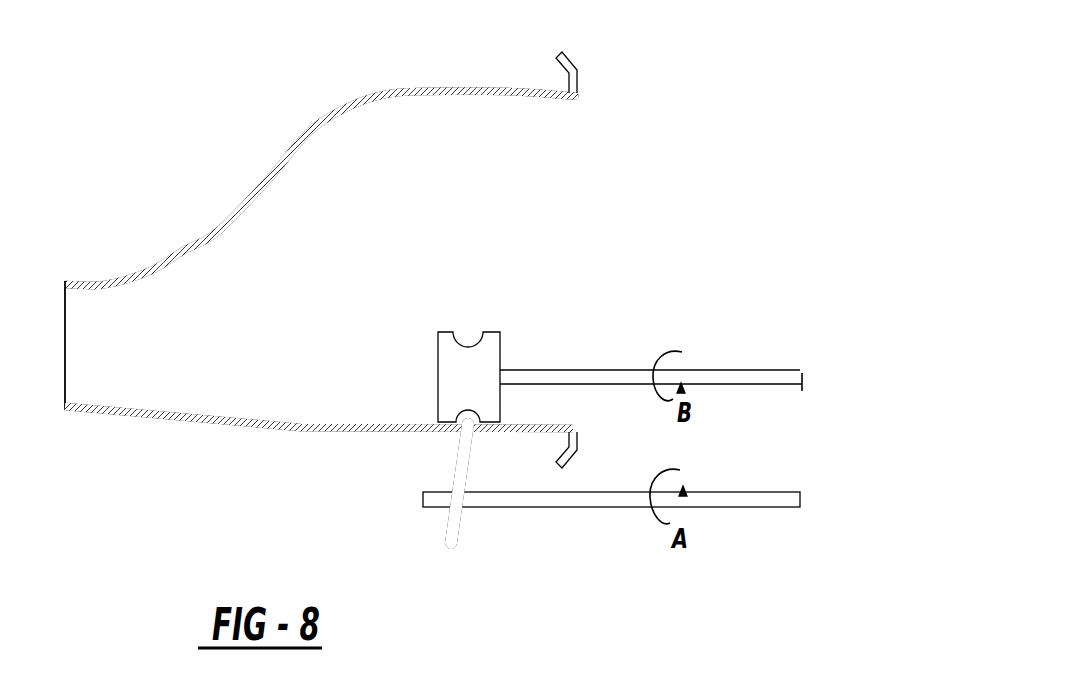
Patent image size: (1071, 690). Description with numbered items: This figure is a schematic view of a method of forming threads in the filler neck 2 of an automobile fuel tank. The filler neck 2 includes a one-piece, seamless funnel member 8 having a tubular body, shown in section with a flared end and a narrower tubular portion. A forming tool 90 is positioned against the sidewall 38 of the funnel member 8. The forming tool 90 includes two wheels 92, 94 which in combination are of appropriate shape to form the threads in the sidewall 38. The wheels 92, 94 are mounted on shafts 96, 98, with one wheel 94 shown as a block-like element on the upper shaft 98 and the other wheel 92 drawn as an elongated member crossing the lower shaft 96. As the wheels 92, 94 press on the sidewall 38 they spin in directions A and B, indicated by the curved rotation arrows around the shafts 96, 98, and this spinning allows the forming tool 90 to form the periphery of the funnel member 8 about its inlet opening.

The filler neck 2 is at (352, 101).
The funnel member 8 is at (213, 424).
The sidewall 38 is at (333, 431).
The forming tool 90 is at (787, 407).
The wheel 92 is at (458, 528).
The wheel 94 is at (447, 372).
The shaft 96 is at (772, 503).
The shaft 98 is at (760, 376).